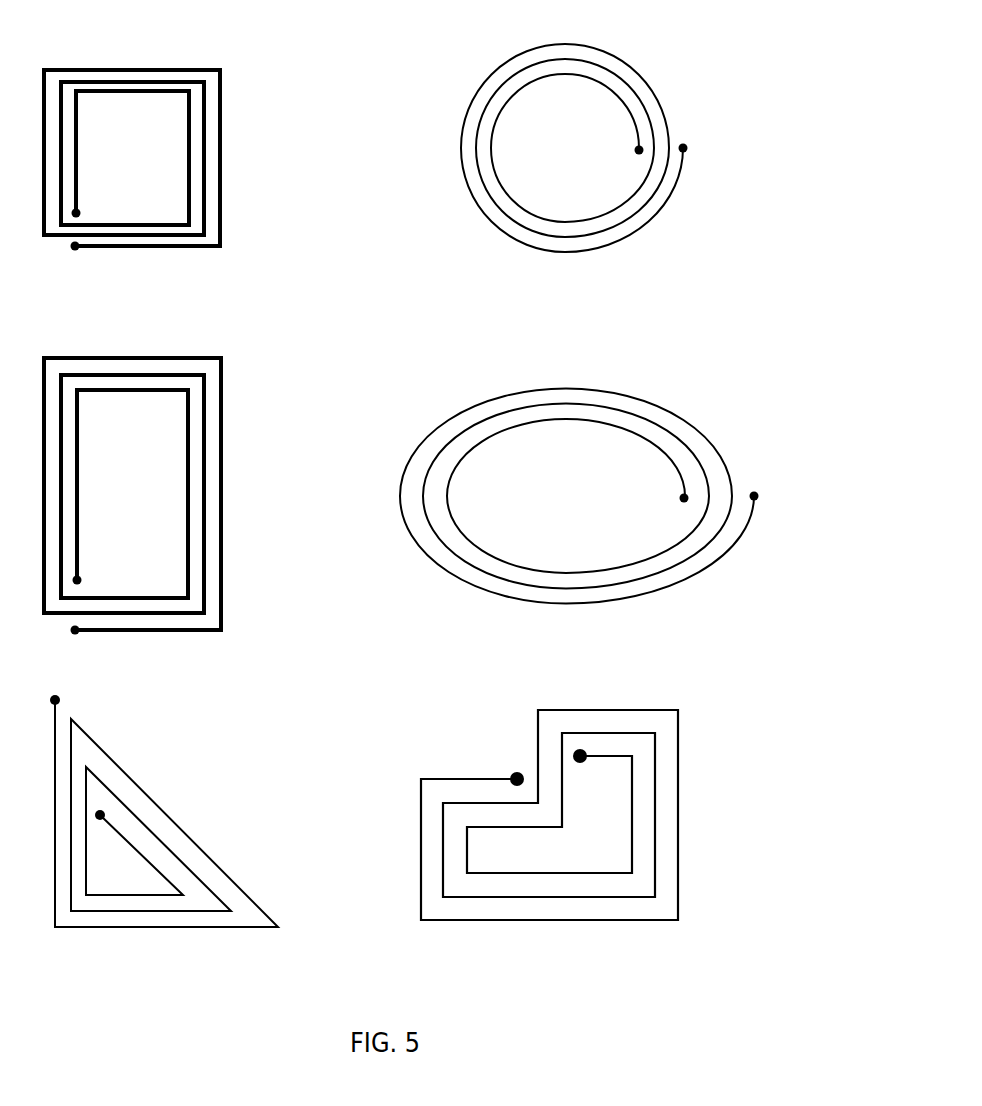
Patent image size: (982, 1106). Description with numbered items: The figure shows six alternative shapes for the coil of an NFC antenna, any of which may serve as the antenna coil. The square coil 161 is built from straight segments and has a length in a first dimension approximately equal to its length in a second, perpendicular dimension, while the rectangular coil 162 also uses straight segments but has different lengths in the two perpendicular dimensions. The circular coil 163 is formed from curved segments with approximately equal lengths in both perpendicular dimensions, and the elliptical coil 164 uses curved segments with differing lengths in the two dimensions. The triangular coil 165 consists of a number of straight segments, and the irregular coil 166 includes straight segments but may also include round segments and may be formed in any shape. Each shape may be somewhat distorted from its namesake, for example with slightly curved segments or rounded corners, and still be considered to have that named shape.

The square coil 161 is at (222, 78).
The rectangular coil 162 is at (222, 369).
The circular coil 163 is at (647, 80).
The elliptical coil 164 is at (702, 435).
The triangular coil 165 is at (112, 757).
The irregular coil 166 is at (679, 724).